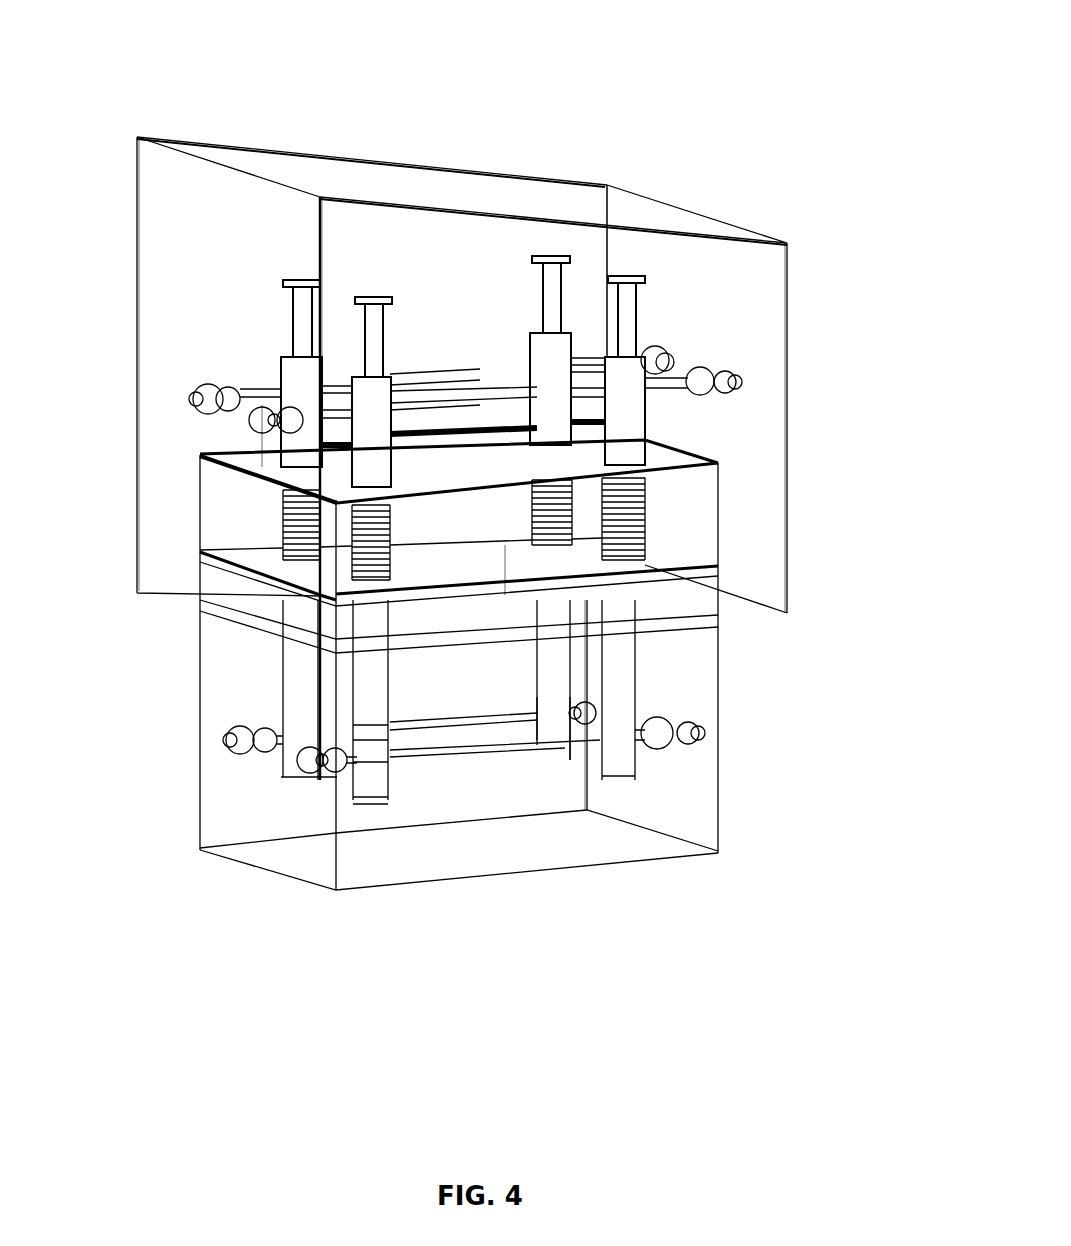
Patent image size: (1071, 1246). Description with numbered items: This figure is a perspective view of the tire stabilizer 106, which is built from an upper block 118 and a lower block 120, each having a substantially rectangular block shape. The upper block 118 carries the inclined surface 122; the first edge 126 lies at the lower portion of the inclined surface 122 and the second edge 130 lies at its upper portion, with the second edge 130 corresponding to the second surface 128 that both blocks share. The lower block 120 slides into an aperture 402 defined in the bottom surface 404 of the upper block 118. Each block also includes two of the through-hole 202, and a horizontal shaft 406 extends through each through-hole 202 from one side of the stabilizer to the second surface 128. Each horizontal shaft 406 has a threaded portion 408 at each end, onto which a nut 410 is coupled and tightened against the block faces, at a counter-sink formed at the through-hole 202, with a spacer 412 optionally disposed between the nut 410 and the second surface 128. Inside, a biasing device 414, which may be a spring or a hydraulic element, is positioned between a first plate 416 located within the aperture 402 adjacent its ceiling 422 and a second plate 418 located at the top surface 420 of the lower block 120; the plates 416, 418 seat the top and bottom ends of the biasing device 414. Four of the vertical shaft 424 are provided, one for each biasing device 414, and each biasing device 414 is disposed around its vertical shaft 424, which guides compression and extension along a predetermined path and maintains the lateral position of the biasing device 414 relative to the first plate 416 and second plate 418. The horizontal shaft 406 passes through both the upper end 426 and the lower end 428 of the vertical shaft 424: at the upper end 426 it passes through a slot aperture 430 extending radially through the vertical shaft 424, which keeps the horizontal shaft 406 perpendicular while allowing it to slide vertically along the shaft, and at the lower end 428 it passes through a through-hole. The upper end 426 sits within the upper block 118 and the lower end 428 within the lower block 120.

The tire stabilizer 106 is at (806, 96).
The second edge 130 is at (213, 168).
The inclined surface 122 is at (413, 188).
The upper block 118 is at (465, 295).
The first edge 126 is at (720, 217).
The second surface 128 is at (203, 273).
The aperture 402 is at (680, 515).
The lower block 120 is at (668, 799).
The bottom surface 404 is at (748, 618).
The first plate 416 is at (504, 595).
The ceiling 422 is at (450, 465).
The second plate 418 is at (413, 573).
The through-hole 202 is at (198, 397).
The threaded portion 408 is at (268, 420).
The slot aperture 430 is at (640, 420).
The upper end 426 is at (625, 355).
The nut 410 is at (277, 450).
The top surface 420 is at (558, 560).
The biasing device 414 is at (600, 563).
The spacer 412 is at (262, 738).
The vertical shaft 424 is at (380, 707).
The horizontal shaft 406 is at (493, 747).
The lower end 428 is at (623, 780).